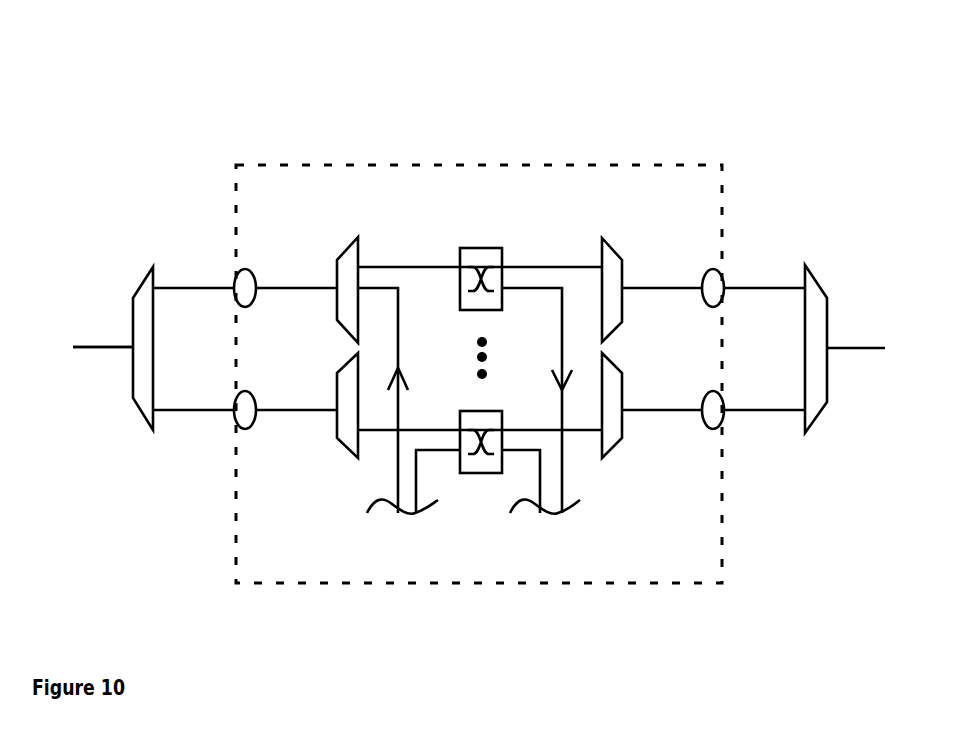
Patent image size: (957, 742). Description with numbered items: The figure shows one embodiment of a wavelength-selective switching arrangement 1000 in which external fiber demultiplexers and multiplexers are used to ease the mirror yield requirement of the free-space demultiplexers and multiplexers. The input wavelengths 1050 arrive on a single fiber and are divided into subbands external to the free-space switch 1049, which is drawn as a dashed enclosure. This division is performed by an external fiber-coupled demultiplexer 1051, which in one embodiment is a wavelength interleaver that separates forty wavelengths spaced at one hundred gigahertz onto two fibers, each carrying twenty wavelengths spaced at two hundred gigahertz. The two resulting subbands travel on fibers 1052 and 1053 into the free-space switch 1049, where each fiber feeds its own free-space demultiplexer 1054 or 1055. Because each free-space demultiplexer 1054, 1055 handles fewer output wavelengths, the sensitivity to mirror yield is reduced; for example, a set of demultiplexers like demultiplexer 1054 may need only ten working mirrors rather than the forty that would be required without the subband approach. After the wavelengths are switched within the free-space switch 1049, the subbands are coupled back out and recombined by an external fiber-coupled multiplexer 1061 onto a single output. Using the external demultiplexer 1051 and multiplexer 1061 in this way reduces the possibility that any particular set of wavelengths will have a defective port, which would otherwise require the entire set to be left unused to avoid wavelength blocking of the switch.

The optical switching system 1000 is at (672, 120).
The free-space switch 1049 is at (240, 157).
The input wavelengths 1050 is at (85, 337).
The external fiber-coupled demultiplexer 1051 is at (142, 280).
The fiber 1052 is at (197, 278).
The fiber 1053 is at (197, 417).
The free-space demultiplexer 1054 is at (342, 248).
The free-space demultiplexer 1055 is at (342, 457).
The external fiber-coupled multiplexer 1061 is at (820, 278).